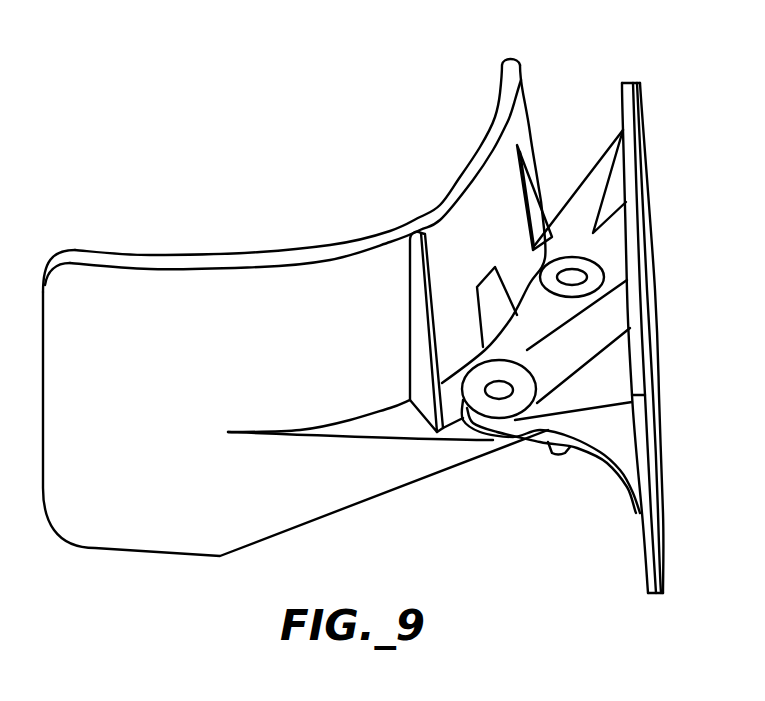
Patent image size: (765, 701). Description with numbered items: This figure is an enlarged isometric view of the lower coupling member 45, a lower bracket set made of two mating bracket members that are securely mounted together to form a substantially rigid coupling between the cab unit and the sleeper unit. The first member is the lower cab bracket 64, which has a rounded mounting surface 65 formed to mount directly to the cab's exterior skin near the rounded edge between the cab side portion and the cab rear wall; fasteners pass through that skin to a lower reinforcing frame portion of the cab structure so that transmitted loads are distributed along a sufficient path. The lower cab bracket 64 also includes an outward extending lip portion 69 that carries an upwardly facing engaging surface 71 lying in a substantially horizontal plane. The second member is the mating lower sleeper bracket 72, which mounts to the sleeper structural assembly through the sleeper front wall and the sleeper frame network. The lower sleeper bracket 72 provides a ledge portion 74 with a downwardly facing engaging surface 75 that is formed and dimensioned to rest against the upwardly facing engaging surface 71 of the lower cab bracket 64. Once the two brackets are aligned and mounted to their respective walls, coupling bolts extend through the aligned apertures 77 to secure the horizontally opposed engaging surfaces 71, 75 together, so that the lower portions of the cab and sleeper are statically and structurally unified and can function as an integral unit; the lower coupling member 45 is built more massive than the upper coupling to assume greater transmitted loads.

The lower coupling member 45 is at (376, 520).
The lower cab bracket 64 is at (117, 544).
The rounded mounting surface 65 is at (270, 254).
The outward extending lip portion 69 is at (417, 485).
The upwardly facing engaging surface 71 is at (385, 423).
The lower sleeper bracket 72 is at (628, 84).
The ledge portion 74 is at (598, 452).
The downwardly facing engaging surface 75 is at (570, 452).
The aligned apertures 77 is at (513, 387).